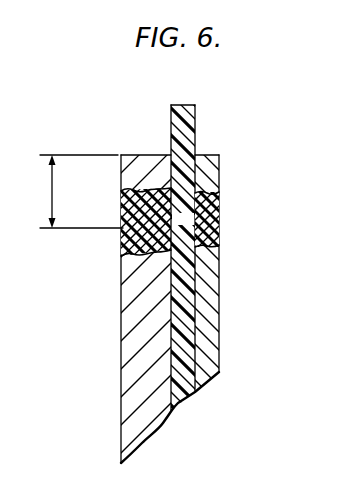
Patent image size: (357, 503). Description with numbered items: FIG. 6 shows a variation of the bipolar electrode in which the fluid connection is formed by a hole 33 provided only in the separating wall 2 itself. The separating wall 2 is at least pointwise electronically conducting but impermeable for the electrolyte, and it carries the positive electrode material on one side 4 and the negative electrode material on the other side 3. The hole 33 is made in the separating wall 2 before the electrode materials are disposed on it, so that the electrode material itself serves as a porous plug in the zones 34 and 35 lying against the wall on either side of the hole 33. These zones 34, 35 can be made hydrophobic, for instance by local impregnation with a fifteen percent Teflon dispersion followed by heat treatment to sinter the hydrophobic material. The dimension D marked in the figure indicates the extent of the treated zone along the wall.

The separating wall 2 is at (195, 131).
The negative electrode side 3 is at (133, 328).
The positive electrode side 4 is at (212, 297).
The hole 33 is at (187, 218).
The porous plug zone 34 is at (208, 229).
The porous plug zone 35 is at (120, 243).
The depth dimension D is at (51, 193).